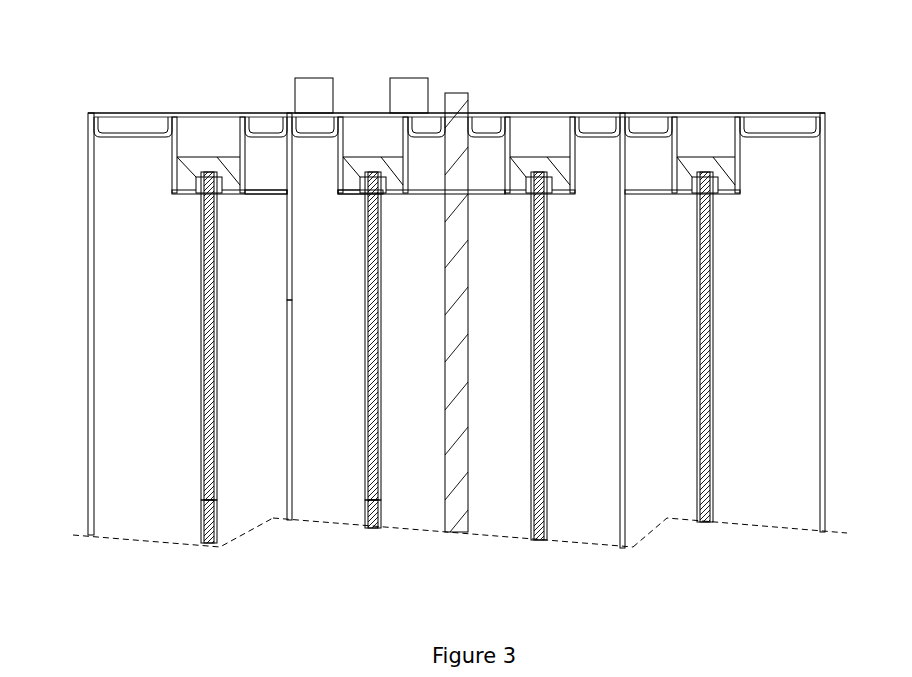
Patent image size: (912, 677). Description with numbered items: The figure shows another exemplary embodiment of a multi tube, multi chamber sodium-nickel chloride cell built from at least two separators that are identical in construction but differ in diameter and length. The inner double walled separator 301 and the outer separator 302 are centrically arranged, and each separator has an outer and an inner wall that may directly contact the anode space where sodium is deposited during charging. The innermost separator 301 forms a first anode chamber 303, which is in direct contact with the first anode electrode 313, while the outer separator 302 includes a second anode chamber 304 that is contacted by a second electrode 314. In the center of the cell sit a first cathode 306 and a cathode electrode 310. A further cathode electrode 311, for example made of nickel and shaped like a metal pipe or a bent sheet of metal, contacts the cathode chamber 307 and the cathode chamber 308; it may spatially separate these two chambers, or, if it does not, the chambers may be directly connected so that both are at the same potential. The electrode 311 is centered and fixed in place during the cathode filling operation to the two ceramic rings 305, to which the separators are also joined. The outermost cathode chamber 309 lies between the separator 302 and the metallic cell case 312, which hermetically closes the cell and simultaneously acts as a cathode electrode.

The inner double walled separator 301 is at (362, 412).
The outer separator 302 is at (200, 227).
The first anode chamber 303 is at (367, 518).
The second anode chamber 304 is at (207, 523).
The ceramic rings 305 is at (290, 288).
The first cathode 306 is at (433, 513).
The cathode chamber 307 is at (332, 482).
The cathode chamber 308 is at (250, 492).
The outermost cathode chamber 309 is at (157, 477).
The cathode electrode 310 is at (460, 103).
The cathode electrode 311 is at (290, 136).
The metallic cell case 312 is at (93, 123).
The first anode electrode 313 is at (379, 160).
The second electrode 314 is at (217, 157).